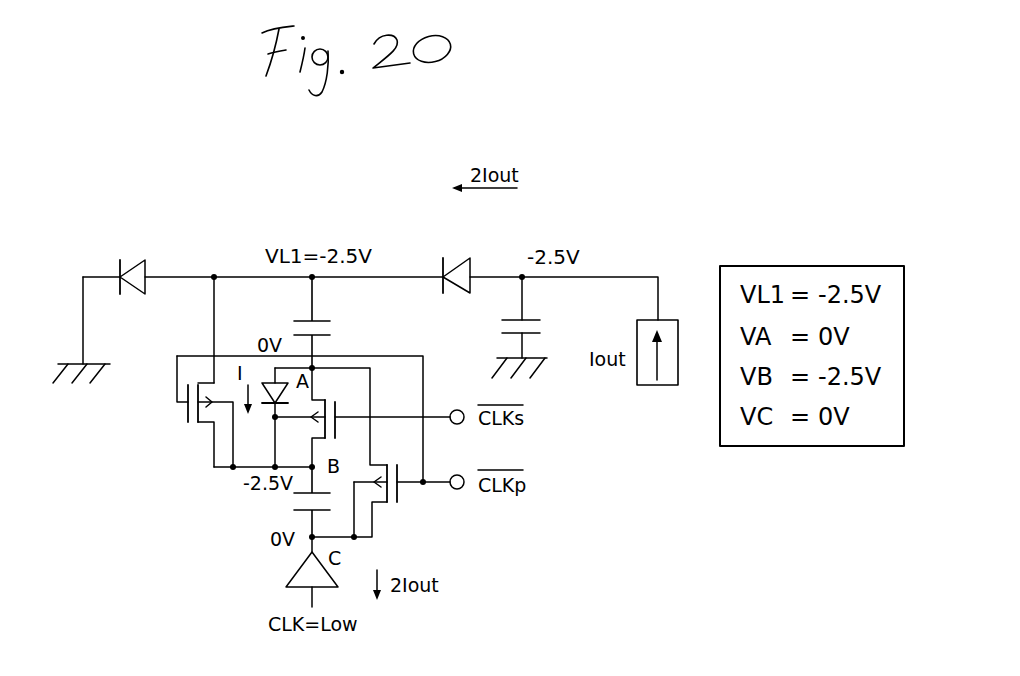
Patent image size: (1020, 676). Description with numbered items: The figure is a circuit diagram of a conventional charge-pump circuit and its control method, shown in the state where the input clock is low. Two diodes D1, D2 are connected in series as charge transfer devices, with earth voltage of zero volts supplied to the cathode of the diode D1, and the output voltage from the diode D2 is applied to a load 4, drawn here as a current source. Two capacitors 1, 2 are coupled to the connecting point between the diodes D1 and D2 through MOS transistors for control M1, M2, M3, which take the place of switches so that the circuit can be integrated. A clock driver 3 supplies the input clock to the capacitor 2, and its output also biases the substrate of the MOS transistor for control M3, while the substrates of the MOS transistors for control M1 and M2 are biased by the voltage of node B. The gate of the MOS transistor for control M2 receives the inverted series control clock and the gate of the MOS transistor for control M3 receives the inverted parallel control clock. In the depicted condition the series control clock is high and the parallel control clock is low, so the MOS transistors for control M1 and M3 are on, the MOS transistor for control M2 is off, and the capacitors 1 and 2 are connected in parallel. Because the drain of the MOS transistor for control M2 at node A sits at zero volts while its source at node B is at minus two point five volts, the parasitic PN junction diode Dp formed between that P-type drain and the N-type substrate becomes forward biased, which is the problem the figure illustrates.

The capacitor 1 is at (340, 330).
The capacitor 2 is at (290, 500).
The clock driver 3 is at (283, 573).
The load 4 is at (650, 393).
The diode D1 is at (142, 250).
The diode D2 is at (462, 250).
The parasitic PN junction diode Dp is at (268, 383).
The MOS transistor for control M1 is at (205, 411).
The MOS transistor for control M2 is at (314, 417).
The MOS transistor for control M3 is at (385, 497).